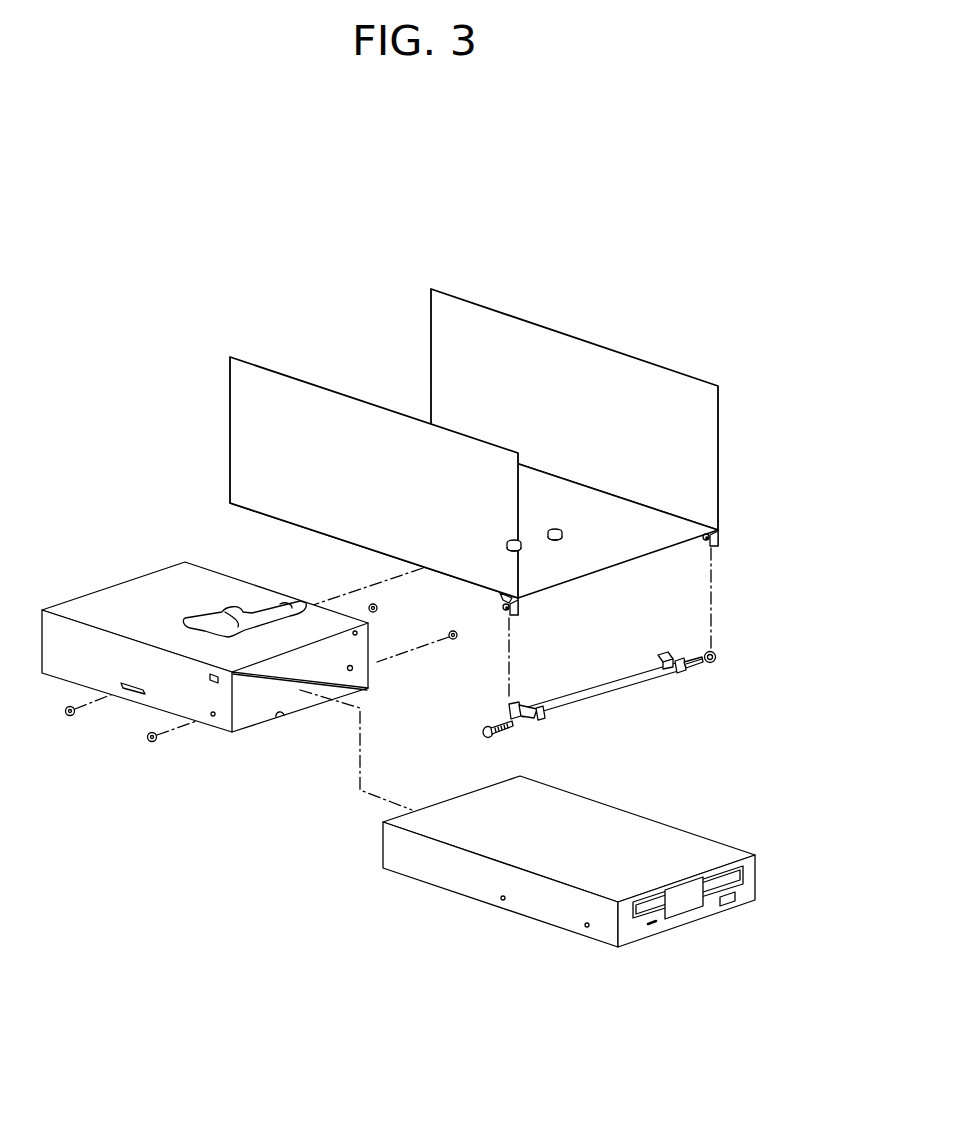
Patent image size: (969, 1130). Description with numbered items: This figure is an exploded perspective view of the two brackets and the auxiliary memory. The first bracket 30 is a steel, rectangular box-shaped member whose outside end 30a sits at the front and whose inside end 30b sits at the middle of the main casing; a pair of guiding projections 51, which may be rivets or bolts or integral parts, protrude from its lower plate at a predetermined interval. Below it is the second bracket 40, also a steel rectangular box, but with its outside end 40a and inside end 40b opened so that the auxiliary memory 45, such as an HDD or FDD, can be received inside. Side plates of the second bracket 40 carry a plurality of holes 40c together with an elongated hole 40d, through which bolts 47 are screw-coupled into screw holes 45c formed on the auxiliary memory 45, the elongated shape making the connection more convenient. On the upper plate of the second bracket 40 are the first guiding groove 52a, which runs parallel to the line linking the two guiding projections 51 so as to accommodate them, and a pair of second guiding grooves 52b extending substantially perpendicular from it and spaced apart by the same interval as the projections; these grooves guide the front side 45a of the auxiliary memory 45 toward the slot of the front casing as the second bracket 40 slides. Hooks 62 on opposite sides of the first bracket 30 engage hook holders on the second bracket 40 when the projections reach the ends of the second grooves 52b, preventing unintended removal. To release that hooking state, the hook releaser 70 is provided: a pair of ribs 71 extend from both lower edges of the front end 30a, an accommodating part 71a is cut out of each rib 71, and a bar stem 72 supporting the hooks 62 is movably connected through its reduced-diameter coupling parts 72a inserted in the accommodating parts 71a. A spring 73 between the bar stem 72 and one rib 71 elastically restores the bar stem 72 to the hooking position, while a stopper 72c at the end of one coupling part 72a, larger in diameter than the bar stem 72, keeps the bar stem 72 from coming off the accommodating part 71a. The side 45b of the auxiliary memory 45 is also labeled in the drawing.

The first bracket 30 is at (515, 483).
The outside end of the first bracket 30a is at (722, 417).
The inside end of the first bracket 30b is at (430, 318).
The guiding projections 51 is at (555, 525).
The ribs 71 is at (722, 537).
The accommodating part 71a is at (712, 547).
The hook releaser 70 is at (591, 684).
The bar stem 72 is at (555, 698).
The coupling parts 72a is at (705, 668).
The stopper 72c is at (727, 657).
The spring 73 is at (490, 722).
The hooks 62 is at (657, 655).
The second bracket 40 is at (222, 655).
The outside end of the second bracket 40a is at (280, 718).
The inside end of the second bracket 40b is at (42, 628).
The holes 40c is at (213, 718).
The elongated hole 40d is at (133, 695).
The bolts 47 is at (70, 716).
The first guiding groove 52a is at (278, 608).
The second guiding grooves 52b is at (203, 620).
The auxiliary memory 45 is at (548, 880).
The front side of the auxiliary memory 45a is at (657, 937).
The side of drive 45b is at (383, 852).
The screw holes 45c is at (587, 927).